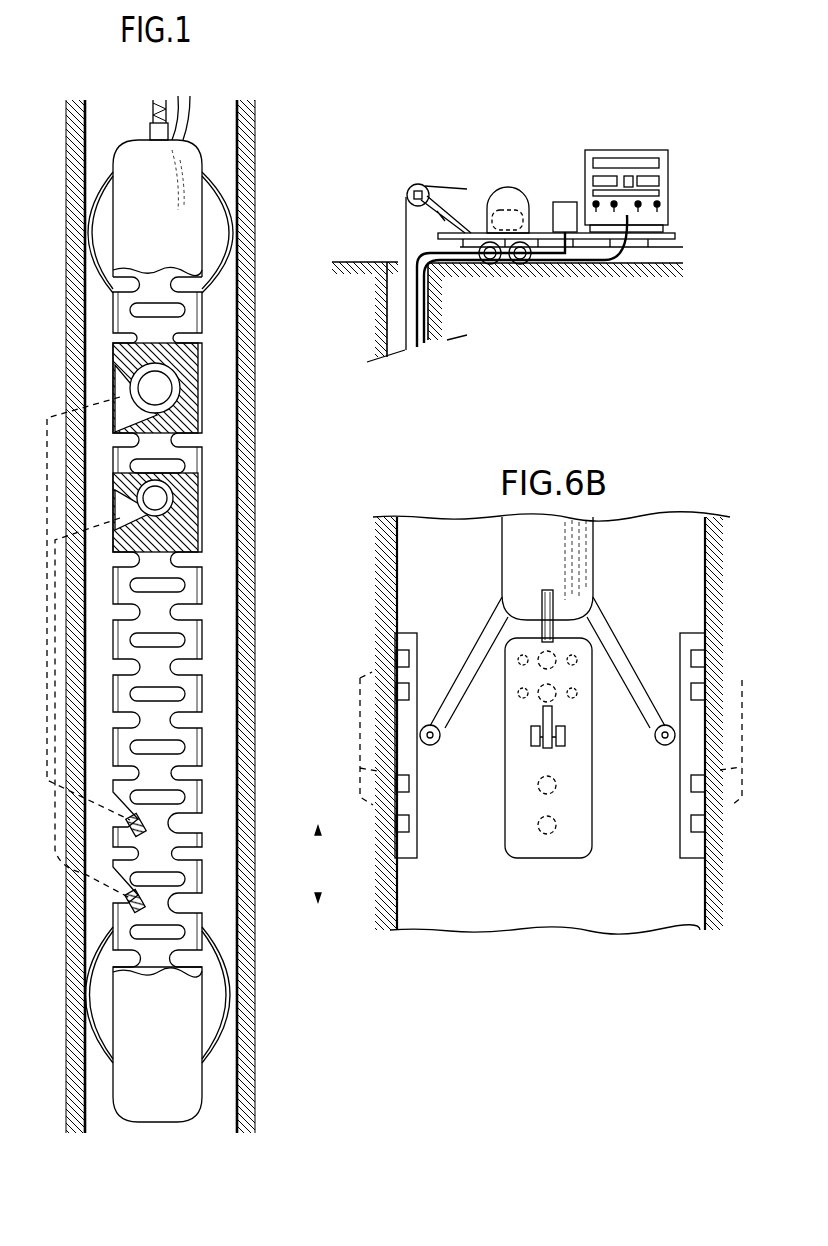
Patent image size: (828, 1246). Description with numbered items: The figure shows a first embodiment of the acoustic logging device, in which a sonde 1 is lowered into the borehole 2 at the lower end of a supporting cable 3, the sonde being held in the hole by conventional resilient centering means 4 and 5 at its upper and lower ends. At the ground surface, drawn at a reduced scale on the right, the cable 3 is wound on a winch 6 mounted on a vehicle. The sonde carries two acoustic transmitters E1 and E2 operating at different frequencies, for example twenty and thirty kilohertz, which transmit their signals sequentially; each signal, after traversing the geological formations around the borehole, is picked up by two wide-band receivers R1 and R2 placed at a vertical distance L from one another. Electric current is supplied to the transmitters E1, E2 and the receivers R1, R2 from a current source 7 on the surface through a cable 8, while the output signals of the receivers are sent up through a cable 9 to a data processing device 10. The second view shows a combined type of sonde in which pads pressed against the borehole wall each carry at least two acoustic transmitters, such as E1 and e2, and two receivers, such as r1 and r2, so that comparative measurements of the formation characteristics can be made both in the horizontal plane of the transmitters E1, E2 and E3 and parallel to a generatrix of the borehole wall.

In FIG. 1, the sonde 1 is at (180, 587).
In FIG. 1, the borehole 2 is at (253, 620).
In FIG. 1, the supporting cable 3 is at (155, 100).
In FIG. 1, the resilient centering means 4 is at (212, 185).
In FIG. 1, the resilient centering means 5 is at (225, 1050).
In FIG. 1, the winch 6 is at (503, 183).
In FIG. 1, the current source 7 is at (563, 200).
In FIG. 1, the cable 8 is at (178, 96).
In FIG. 1, the cable 9 is at (190, 96).
In FIG. 1, the data processing device 10 is at (622, 150).
In FIG. 1, the acoustic transmitter E1 is at (180, 390).
In FIG. 6B, the acoustic transmitter E1 is at (722, 739).
In FIG. 1, the acoustic transmitter E2 is at (180, 497).
In FIG. 6B, the acoustic transmitter E2 is at (543, 667).
In FIG. 6B, the acoustic transmitter E3 is at (395, 648).
In FIG. 1, the wide-band receiver R1 is at (145, 820).
In FIG. 1, the wide-band receiver R2 is at (140, 905).
In FIG. 6B, the wide-band receiver R2 is at (575, 664).
In FIG. 1, the vertical distance L is at (325, 864).
In FIG. 6B, the acoustic transmitter e2 is at (720, 669).
In FIG. 6B, the receiver r1 is at (692, 785).
In FIG. 6B, the receiver r2 is at (692, 822).